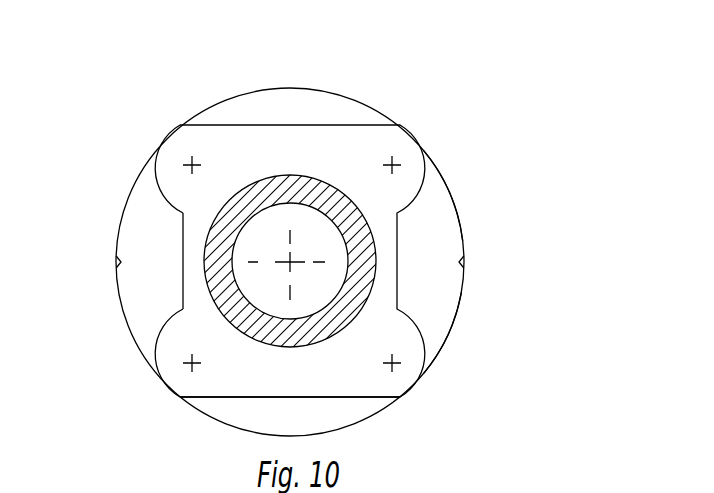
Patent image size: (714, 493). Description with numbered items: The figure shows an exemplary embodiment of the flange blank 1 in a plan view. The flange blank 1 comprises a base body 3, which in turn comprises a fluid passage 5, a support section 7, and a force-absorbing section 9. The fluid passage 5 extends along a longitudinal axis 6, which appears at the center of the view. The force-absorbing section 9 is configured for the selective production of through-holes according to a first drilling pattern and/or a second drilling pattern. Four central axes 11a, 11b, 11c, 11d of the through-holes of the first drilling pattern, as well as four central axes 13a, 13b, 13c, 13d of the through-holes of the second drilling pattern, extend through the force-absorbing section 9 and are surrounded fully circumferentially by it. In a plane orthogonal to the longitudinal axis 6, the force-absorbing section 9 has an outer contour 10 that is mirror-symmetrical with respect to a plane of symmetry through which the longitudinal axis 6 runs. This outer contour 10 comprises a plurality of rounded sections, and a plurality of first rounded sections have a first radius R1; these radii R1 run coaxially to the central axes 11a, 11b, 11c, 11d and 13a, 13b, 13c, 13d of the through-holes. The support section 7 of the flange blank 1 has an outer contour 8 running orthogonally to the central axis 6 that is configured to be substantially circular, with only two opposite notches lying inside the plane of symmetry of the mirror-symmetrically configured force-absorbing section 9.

The flange blank 1 is at (101, 143).
The base body 3 is at (455, 323).
The fluid passage 5 is at (282, 218).
The longitudinal axis 6 is at (277, 280).
The support section 7 is at (447, 222).
The outer contour 8 is at (463, 285).
The force-absorbing section 9 is at (340, 373).
The outer contour 10 is at (163, 200).
The first radius R1 is at (165, 147).
The central axis 11a is at (265, 100).
The central axis 13a is at (211, 139).
The central axis 11b is at (110, 346).
The central axis 13b is at (172, 338).
The central axis 11c is at (475, 400).
The central axis 13c is at (413, 377).
The central axis 11d is at (465, 120).
The central axis 13d is at (416, 137).